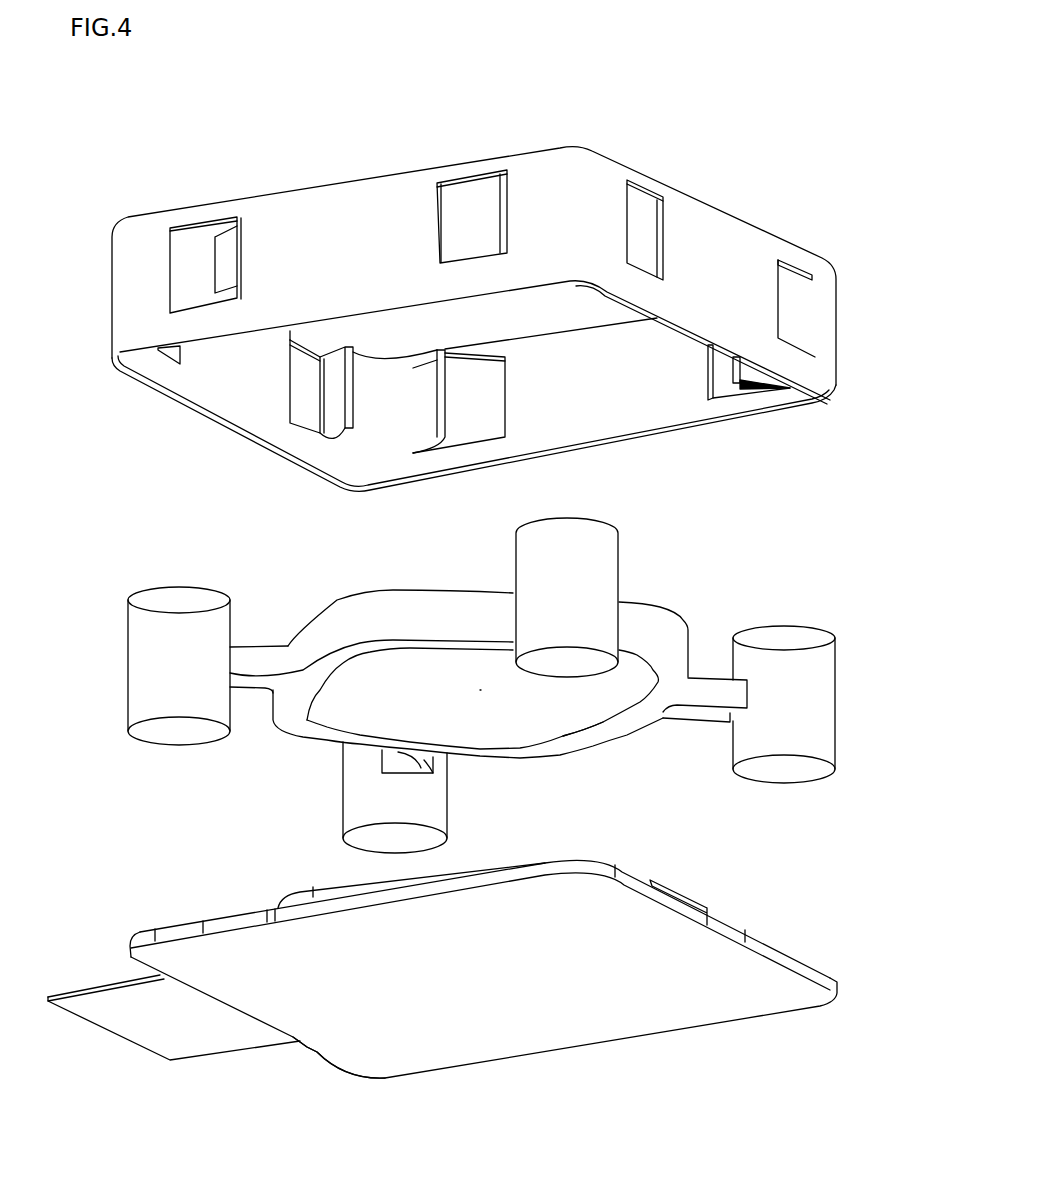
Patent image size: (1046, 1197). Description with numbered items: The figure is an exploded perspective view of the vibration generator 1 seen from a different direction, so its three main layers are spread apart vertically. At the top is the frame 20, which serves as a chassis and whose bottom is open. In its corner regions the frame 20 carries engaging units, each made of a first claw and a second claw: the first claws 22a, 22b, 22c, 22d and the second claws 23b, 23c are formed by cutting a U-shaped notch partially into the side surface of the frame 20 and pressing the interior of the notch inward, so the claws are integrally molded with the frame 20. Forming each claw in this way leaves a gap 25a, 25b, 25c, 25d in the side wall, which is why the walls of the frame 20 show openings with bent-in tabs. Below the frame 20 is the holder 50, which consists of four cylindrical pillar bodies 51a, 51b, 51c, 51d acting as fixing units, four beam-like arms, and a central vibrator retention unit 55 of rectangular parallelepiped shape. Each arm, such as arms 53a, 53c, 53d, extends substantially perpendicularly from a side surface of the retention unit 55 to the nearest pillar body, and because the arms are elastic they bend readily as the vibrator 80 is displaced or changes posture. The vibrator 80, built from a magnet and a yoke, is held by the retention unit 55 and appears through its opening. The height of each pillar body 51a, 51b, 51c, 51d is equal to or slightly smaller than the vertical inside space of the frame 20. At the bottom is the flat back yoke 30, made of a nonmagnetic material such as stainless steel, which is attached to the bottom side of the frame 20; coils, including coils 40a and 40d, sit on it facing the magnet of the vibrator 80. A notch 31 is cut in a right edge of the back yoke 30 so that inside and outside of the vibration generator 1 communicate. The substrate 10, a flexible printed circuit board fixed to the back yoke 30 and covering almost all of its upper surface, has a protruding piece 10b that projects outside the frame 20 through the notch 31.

The vibration generator 1 is at (712, 53).
The substrate 10 is at (197, 1025).
The protruding piece 10b is at (83, 990).
The frame 20 is at (307, 186).
The first claw 22a is at (190, 267).
The first claw 22b is at (452, 417).
The first claw 22c is at (757, 378).
The first claw 22d is at (497, 188).
The second claw 23b is at (333, 383).
The second claw 23c is at (789, 305).
The gap 25a is at (234, 248).
The gap 25b is at (307, 417).
The gap 25c is at (723, 387).
The gap 25d is at (463, 253).
The back yoke 30 is at (452, 1040).
The notch 31 is at (298, 1043).
The coil 40a is at (307, 892).
The coil 40d is at (699, 902).
The holder 50 is at (302, 628).
The pillar body 51a is at (148, 648).
The pillar body 51b is at (375, 817).
The pillar body 51c is at (790, 663).
The pillar body 51d is at (612, 582).
The arm 53a is at (256, 688).
The arm 53c is at (706, 722).
The arm 53d is at (424, 772).
The vibrator retention unit 55 is at (643, 713).
The vibrator 80 is at (527, 713).